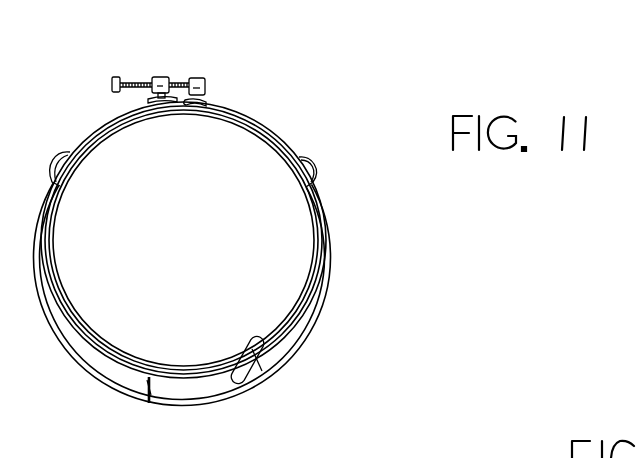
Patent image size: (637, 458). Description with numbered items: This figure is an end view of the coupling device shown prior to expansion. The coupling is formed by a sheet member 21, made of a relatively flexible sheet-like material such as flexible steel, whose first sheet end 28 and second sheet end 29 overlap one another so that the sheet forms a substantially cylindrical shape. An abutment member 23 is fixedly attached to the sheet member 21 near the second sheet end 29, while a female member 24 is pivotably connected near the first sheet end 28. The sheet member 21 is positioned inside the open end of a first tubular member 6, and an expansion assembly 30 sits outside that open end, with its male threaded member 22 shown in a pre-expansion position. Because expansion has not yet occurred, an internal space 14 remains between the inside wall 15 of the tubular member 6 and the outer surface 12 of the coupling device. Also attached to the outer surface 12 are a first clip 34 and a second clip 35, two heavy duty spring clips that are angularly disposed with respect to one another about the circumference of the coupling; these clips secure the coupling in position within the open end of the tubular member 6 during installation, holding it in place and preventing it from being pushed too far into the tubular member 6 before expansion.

The first tubular member 6 is at (63, 350).
The outer surface 12 is at (240, 368).
The internal space 14 is at (215, 380).
The inside wall 15 is at (270, 350).
The sheet member 21 is at (148, 398).
The male threaded member 22 is at (112, 93).
The abutment member 23 is at (204, 79).
The female member 24 is at (163, 77).
The first sheet end 28 is at (210, 104).
The second sheet end 29 is at (209, 102).
The expansion assembly 30 is at (148, 73).
The first clip 34 is at (69, 153).
The second clip 35 is at (303, 157).